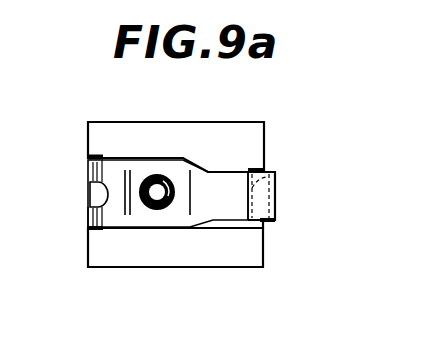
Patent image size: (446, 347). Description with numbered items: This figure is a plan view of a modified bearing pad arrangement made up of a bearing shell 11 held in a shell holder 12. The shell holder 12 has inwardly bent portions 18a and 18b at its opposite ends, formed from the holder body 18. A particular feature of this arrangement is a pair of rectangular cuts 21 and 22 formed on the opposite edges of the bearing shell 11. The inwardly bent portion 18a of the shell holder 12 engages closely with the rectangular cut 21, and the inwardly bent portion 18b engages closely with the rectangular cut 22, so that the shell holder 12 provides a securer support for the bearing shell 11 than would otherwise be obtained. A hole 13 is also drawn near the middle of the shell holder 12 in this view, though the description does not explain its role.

The bearing shell 11 is at (263, 254).
The shell holder 12 is at (151, 159).
The hole 13 is at (156, 198).
The intermediate member 18 is at (211, 181).
The inwardly bent portion 18a is at (275, 207).
The inwardly bent portion 18b is at (89, 212).
The rectangular cut 21 is at (277, 178).
The rectangular cut 22 is at (97, 190).